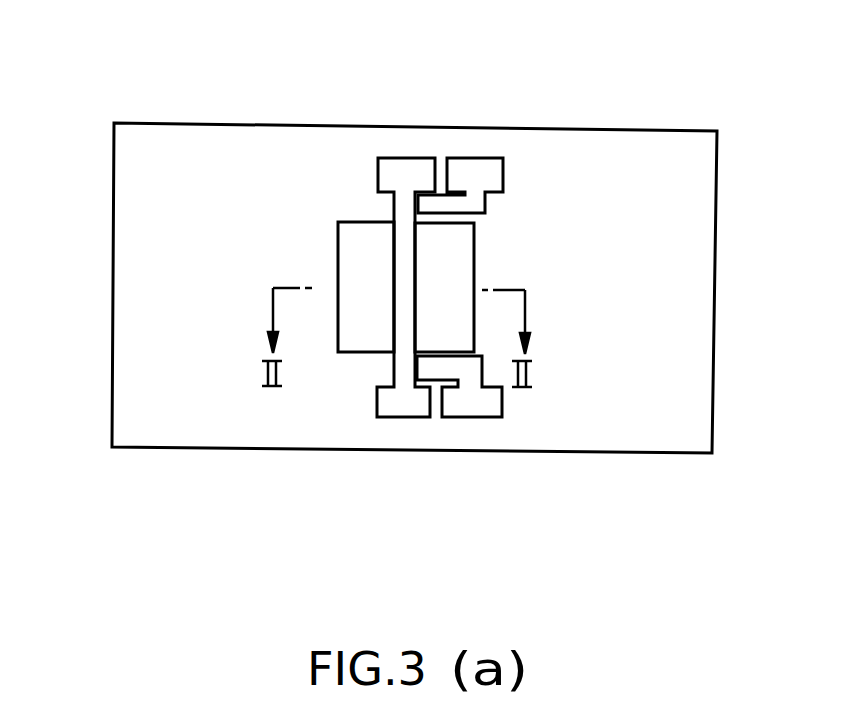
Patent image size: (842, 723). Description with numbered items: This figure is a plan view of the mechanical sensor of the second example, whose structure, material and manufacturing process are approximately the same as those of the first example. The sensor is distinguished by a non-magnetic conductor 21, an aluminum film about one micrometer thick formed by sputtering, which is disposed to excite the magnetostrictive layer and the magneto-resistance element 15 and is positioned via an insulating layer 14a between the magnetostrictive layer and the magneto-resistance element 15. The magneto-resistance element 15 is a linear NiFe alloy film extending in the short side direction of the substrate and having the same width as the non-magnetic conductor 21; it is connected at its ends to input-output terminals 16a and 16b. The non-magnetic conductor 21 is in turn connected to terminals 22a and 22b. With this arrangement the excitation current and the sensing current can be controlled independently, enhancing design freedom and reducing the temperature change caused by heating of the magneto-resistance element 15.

The insulating layer 14a is at (355, 232).
The magneto-resistance element 15 is at (403, 250).
The input-output terminal 16a is at (408, 173).
The input-output terminal 16b is at (405, 398).
The non-magnetic conductor 21 is at (468, 210).
The terminal 22a is at (475, 172).
The terminal 22b is at (482, 405).